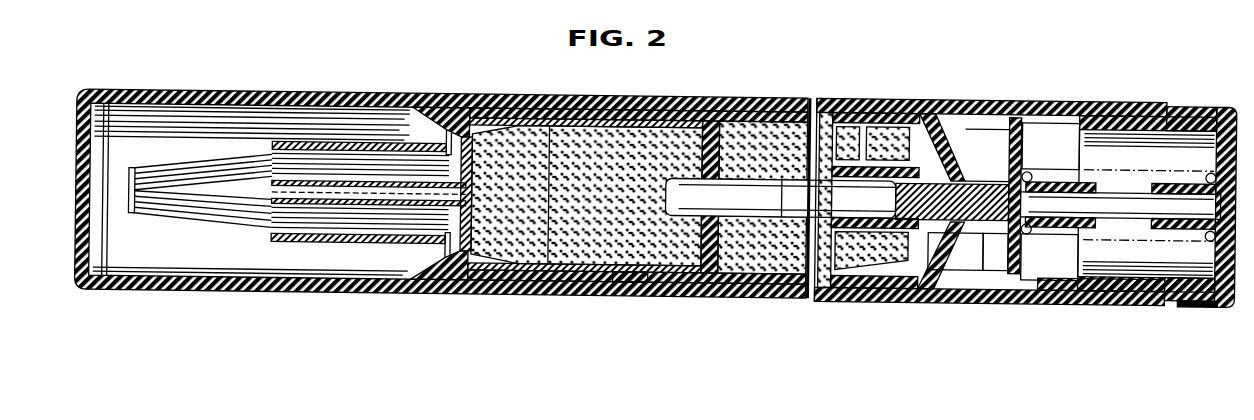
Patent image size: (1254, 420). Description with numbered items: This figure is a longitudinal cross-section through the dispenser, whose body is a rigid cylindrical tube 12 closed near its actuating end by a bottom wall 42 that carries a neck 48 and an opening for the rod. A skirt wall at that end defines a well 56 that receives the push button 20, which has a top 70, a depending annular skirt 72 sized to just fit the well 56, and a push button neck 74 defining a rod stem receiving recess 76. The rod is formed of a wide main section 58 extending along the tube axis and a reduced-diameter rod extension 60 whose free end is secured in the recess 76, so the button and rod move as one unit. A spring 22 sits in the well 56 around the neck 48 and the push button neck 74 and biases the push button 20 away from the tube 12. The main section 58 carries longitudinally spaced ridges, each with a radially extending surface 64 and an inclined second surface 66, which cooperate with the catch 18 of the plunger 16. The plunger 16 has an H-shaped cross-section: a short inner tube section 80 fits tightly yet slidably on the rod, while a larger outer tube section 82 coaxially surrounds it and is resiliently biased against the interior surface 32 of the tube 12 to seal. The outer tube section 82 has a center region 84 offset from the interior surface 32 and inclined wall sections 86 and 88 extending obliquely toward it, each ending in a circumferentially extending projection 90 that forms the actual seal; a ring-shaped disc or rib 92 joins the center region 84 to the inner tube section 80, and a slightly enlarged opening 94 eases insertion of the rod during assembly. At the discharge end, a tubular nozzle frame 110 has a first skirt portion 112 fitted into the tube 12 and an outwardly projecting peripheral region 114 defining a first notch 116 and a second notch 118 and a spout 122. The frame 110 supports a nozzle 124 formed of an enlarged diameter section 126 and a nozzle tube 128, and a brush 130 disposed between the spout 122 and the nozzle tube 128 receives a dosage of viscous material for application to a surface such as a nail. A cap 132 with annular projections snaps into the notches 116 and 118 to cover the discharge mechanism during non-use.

The cylindrical tube 12 is at (670, 100).
The plunger 16 is at (883, 105).
The catch 18 is at (1024, 138).
The push button 20 is at (1203, 115).
The spring 22 is at (1173, 290).
The interior surface 32 is at (733, 297).
The bottom wall 42 is at (1008, 257).
The neck 48 is at (1052, 232).
The well 56 is at (1065, 140).
The main section 58 is at (745, 205).
The rod extension 60 is at (1118, 205).
The radially extending surface 64 is at (990, 165).
The inclined second surface 66 is at (968, 168).
The top 70 is at (1228, 307).
The skirt 72 is at (1201, 301).
The push button neck 74 is at (1109, 282).
The rod stem receiving recess 76 is at (1182, 198).
The inner tube section 80 is at (792, 295).
The outer tube section 82 is at (884, 299).
The center region 84 is at (927, 112).
The inclined wall section 86 is at (907, 297).
The inclined wall section 88 is at (953, 297).
The circumferentially extending projection 90 is at (842, 297).
The ring-shaped disc or rib 92 is at (917, 254).
The enlarged opening 94 is at (817, 177).
The tubular nozzle frame 110 is at (563, 292).
The first skirt portion 112 is at (635, 292).
The outwardly projecting peripheral region 114 is at (430, 107).
The first notch 116 is at (520, 297).
The second notch 118 is at (462, 290).
The spout 122 is at (291, 290).
The nozzle 124 is at (497, 155).
The enlarged diameter section 126 is at (670, 293).
The nozzle tube 128 is at (370, 205).
The brush 130 is at (170, 208).
The cap 132 is at (143, 295).